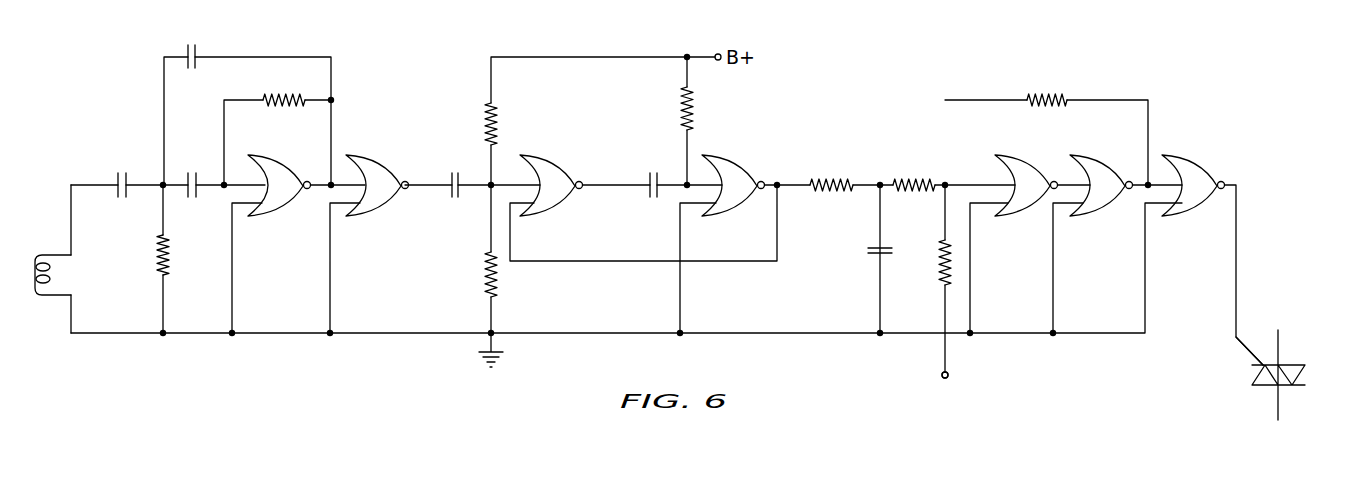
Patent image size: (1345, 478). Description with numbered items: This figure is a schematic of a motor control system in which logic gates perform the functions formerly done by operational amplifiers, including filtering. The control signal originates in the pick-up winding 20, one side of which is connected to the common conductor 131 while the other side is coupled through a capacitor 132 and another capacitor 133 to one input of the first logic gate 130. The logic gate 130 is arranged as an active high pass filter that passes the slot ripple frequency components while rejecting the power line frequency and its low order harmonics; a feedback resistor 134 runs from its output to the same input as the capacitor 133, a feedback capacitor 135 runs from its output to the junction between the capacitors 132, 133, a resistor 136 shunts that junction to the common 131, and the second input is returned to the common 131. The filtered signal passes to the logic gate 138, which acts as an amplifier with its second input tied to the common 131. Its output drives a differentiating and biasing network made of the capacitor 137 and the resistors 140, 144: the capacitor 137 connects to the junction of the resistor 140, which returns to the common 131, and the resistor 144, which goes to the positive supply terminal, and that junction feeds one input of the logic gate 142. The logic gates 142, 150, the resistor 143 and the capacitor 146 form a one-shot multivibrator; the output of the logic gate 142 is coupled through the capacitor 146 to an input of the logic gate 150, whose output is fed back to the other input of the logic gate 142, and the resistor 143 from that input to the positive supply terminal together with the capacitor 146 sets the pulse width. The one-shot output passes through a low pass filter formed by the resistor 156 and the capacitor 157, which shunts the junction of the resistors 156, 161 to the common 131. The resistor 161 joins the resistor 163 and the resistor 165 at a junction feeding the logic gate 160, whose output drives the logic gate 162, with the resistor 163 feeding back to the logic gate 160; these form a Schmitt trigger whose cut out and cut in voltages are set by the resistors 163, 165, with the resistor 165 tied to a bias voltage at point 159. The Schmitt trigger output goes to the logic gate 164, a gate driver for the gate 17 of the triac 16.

The triac 16 is at (1290, 386).
The gate of triac 17 is at (1243, 347).
The pick-up winding 20 is at (52, 274).
The first logic gate 130 is at (298, 147).
The common conductor 131 is at (395, 333).
The capacitor 132 is at (121, 170).
The capacitor 133 is at (191, 170).
The feedback resistor 134 is at (286, 94).
The feedback capacitor 135 is at (196, 46).
The resistor 136 is at (170, 250).
The capacitor 137 is at (457, 170).
The logic gate 138 is at (390, 147).
The resistor 140 is at (486, 279).
The logic gate 142 is at (552, 161).
The resistor 143 is at (694, 110).
The resistor 144 is at (498, 120).
The capacitor 146 is at (656, 170).
The logic gate 150 is at (732, 161).
The resistor 156 is at (830, 177).
The capacitor 157 is at (870, 250).
The bias voltage point 159 is at (947, 378).
The logic gate 160 is at (1035, 147).
The resistor 161 is at (912, 177).
The logic gate 162 is at (1113, 147).
The resistor 163 is at (1047, 95).
The logic gate 164 is at (1195, 165).
The resistor 165 is at (938, 258).